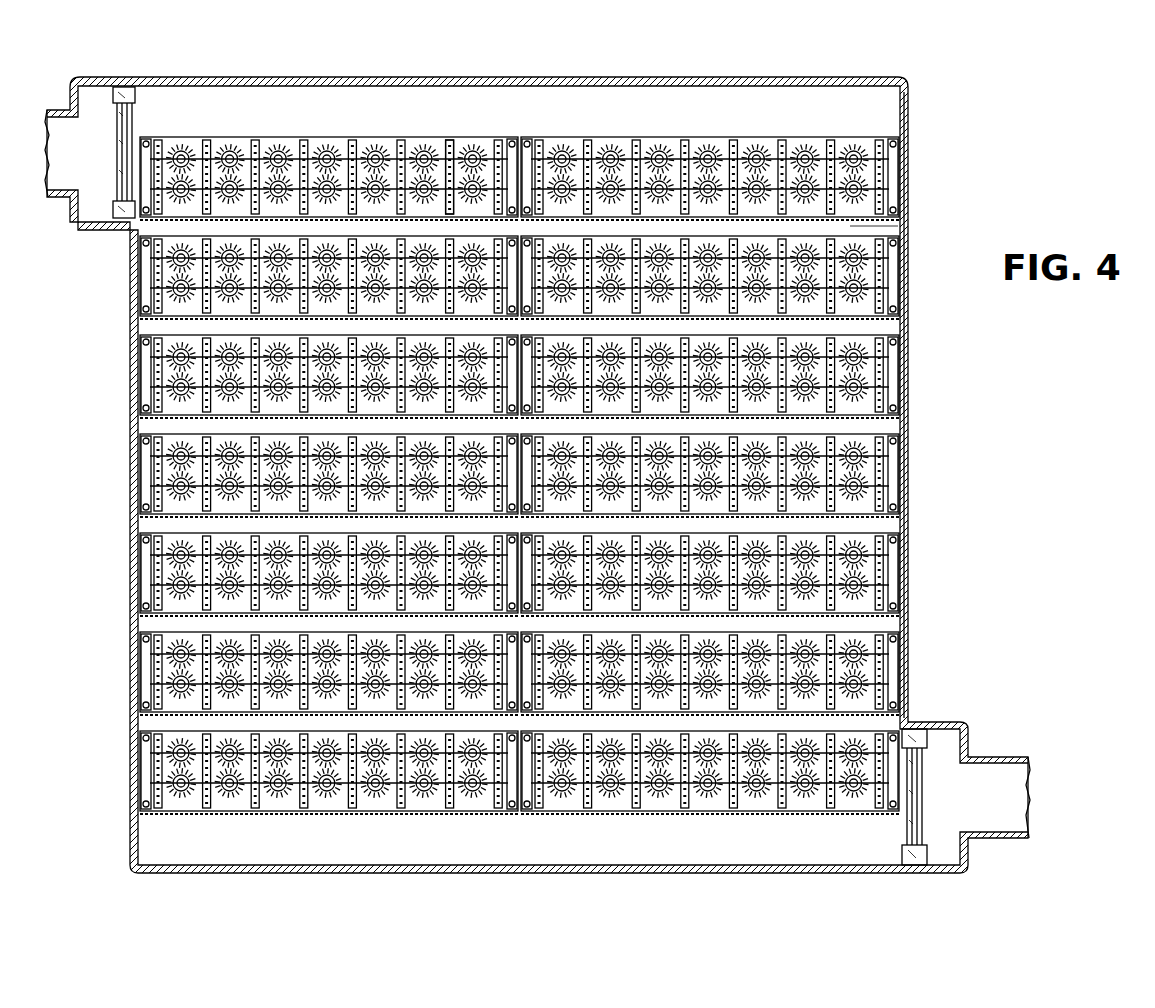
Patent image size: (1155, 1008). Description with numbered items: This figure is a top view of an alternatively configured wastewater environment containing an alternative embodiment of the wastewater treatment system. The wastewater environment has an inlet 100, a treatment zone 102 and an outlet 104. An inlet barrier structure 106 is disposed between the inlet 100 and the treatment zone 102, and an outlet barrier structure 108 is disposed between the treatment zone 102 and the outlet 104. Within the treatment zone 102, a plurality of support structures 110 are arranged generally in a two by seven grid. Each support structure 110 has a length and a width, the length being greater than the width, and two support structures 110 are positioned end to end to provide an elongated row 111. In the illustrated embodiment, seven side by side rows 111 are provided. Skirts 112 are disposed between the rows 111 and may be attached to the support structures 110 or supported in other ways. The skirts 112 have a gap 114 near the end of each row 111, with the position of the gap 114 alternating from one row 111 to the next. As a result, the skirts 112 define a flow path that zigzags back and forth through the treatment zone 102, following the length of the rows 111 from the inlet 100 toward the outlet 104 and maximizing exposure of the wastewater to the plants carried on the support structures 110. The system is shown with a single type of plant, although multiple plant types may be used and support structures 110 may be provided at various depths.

The inlet 100 is at (70, 153).
The treatment zone 102 is at (837, 78).
The outlet 104 is at (1004, 797).
The inlet barrier structure 106 is at (132, 91).
The outlet barrier structure 108 is at (924, 857).
The support structure 110 is at (340, 134).
The row 111 is at (915, 148).
The skirt 112 is at (462, 212).
The gap 114 is at (868, 224).